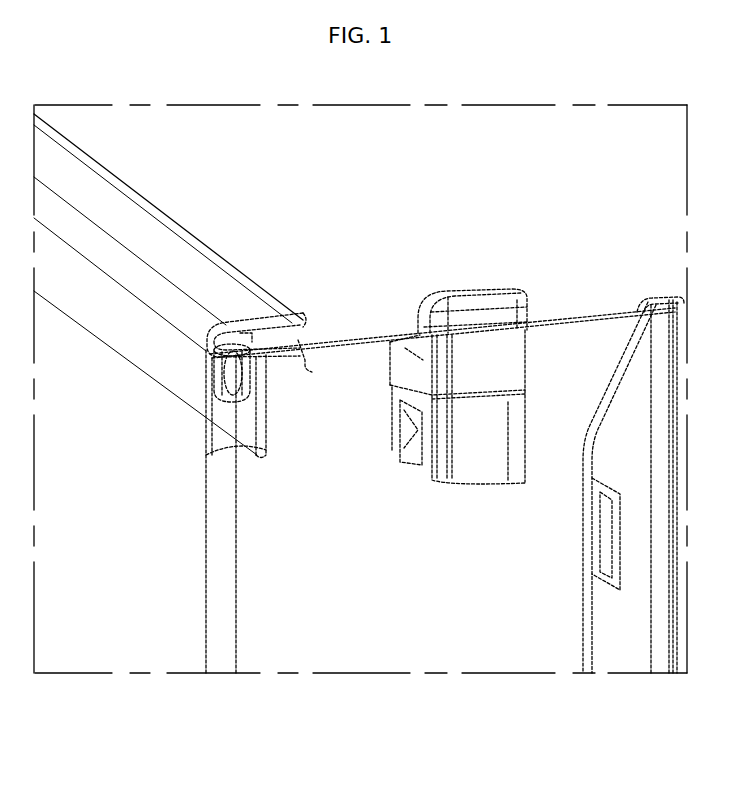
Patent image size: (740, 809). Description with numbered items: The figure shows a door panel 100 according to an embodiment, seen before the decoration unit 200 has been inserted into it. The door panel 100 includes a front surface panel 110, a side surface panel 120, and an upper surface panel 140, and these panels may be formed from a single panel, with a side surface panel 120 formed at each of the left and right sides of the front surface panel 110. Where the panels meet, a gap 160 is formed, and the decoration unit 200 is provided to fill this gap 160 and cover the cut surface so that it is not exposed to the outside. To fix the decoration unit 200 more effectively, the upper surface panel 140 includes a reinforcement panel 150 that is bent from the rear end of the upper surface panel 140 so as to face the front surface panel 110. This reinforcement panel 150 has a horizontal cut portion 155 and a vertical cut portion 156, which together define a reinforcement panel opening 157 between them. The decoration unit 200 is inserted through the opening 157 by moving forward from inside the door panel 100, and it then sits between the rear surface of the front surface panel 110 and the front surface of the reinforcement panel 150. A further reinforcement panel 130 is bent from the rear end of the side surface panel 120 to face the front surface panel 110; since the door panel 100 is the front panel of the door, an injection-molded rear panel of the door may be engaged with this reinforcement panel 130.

The door panel 100 is at (247, 245).
The front surface panel 110 is at (181, 603).
The side surface panel 120 is at (388, 603).
The reinforcement panel 130 is at (632, 400).
The upper surface panel 140 is at (125, 221).
The reinforcement panel 150 is at (305, 322).
The horizontal cut portion 155 is at (312, 318).
The vertical cut portion 156 is at (268, 413).
The reinforcement panel opening 157 is at (314, 378).
The gap 160 is at (255, 340).
The decoration unit 200 is at (507, 283).